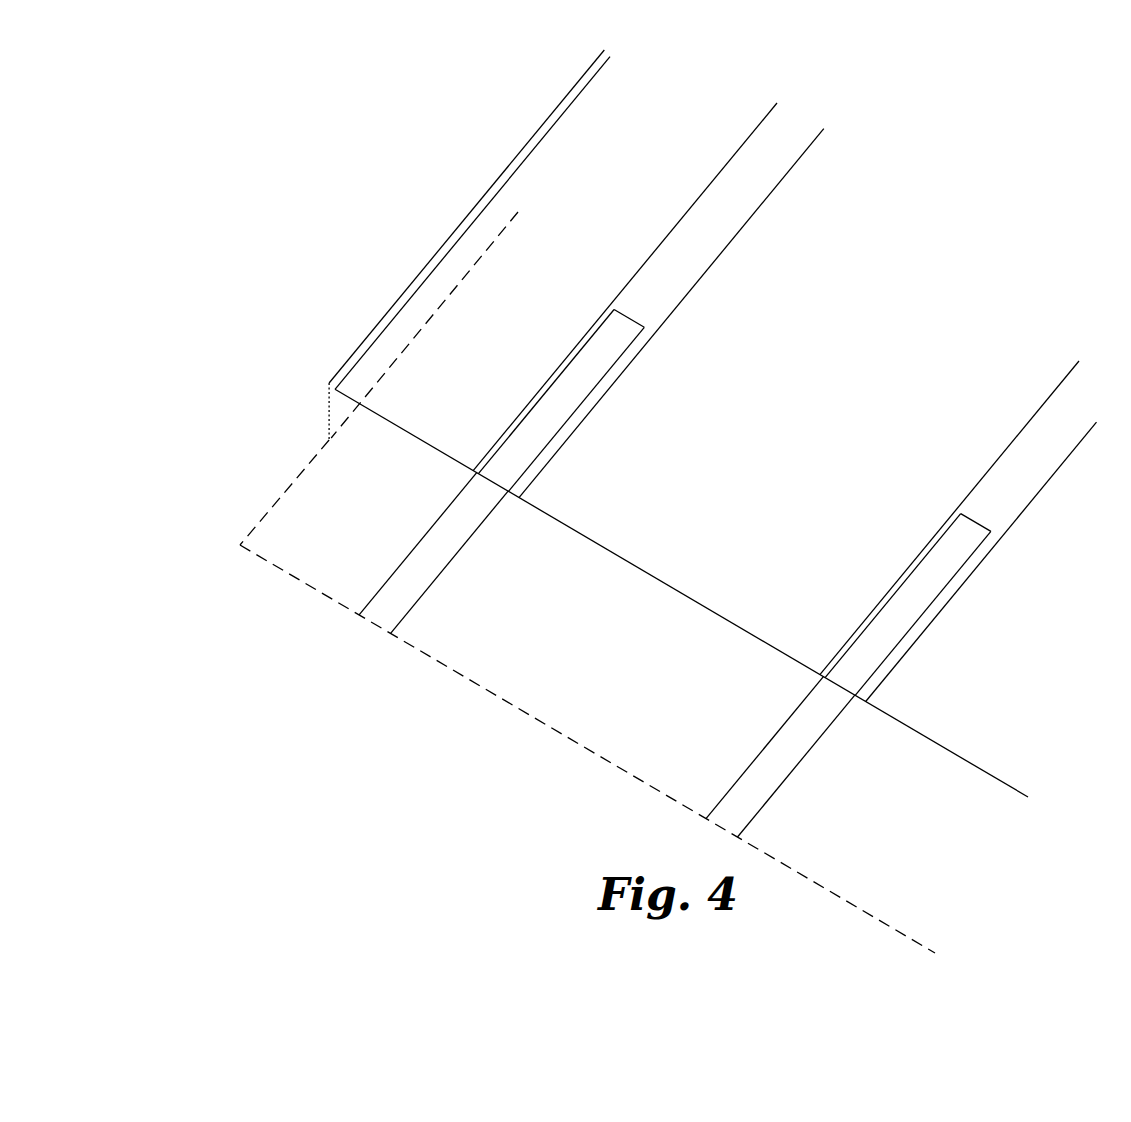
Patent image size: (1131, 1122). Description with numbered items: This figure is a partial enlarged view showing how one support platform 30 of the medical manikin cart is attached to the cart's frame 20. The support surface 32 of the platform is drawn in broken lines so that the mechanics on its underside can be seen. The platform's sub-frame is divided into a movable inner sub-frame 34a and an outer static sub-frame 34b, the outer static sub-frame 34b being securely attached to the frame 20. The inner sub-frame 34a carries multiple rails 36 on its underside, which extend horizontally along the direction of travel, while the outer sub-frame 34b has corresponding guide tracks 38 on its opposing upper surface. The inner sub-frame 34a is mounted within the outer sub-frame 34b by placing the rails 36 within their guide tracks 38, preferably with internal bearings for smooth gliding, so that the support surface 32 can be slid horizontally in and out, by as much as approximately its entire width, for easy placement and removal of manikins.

The frame 20 is at (373, 327).
The support platform 30 is at (266, 473).
The support surface 32 is at (585, 626).
The inner sub-frame 34a is at (457, 672).
The outer static sub-frame 34b is at (465, 233).
The rails 36 is at (393, 600).
The guide tracks 38 is at (703, 237).